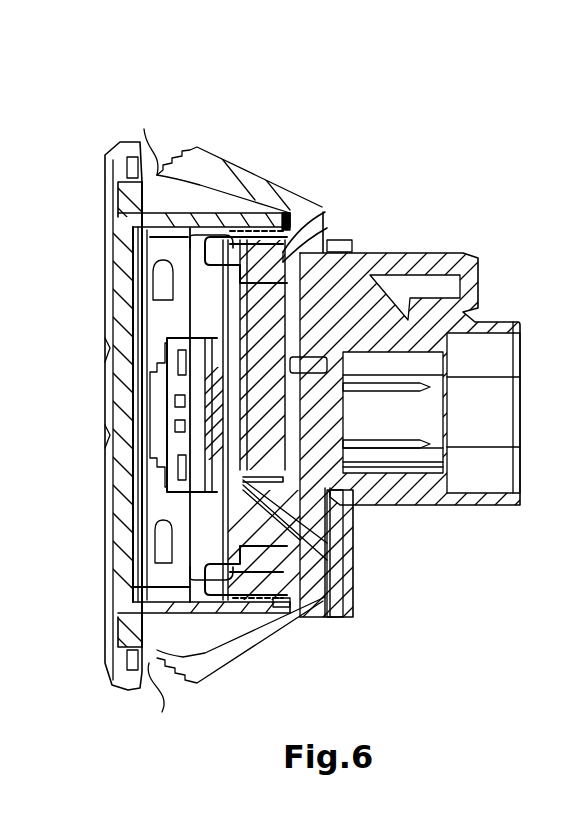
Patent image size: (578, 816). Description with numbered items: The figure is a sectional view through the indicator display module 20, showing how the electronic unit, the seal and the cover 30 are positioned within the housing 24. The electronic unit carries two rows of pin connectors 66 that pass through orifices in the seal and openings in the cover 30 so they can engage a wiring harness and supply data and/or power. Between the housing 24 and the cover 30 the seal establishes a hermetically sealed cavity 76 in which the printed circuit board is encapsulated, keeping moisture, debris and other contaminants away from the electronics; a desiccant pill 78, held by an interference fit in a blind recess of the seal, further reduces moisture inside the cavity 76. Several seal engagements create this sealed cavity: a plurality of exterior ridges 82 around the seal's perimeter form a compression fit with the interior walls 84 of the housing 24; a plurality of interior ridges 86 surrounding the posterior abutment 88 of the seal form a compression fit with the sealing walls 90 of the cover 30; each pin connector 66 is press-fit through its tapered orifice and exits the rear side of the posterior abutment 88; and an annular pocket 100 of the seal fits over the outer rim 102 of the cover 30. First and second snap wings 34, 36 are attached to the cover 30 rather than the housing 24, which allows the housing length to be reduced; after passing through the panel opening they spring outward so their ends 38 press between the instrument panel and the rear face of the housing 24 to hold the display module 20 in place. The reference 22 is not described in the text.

The indicator display module 20 is at (255, 100).
The housing 22 is at (105, 663).
The housing 24 is at (170, 608).
The cover 30 is at (430, 218).
The first snap wing 34 is at (248, 183).
The second snap wing 36 is at (238, 657).
The ends 38 is at (153, 417).
The pin connectors 66 is at (373, 387).
The hermetically sealed cavity 76 is at (165, 413).
The desiccant pill 78 is at (363, 268).
The exterior ridges 82 is at (290, 222).
The interior walls 84 is at (213, 213).
The interior ridges 86 is at (286, 255).
The posterior abutment 88 is at (343, 495).
The sealing walls 90 is at (250, 483).
The annular pocket 100 is at (250, 486).
The outer rim 102 is at (312, 215).